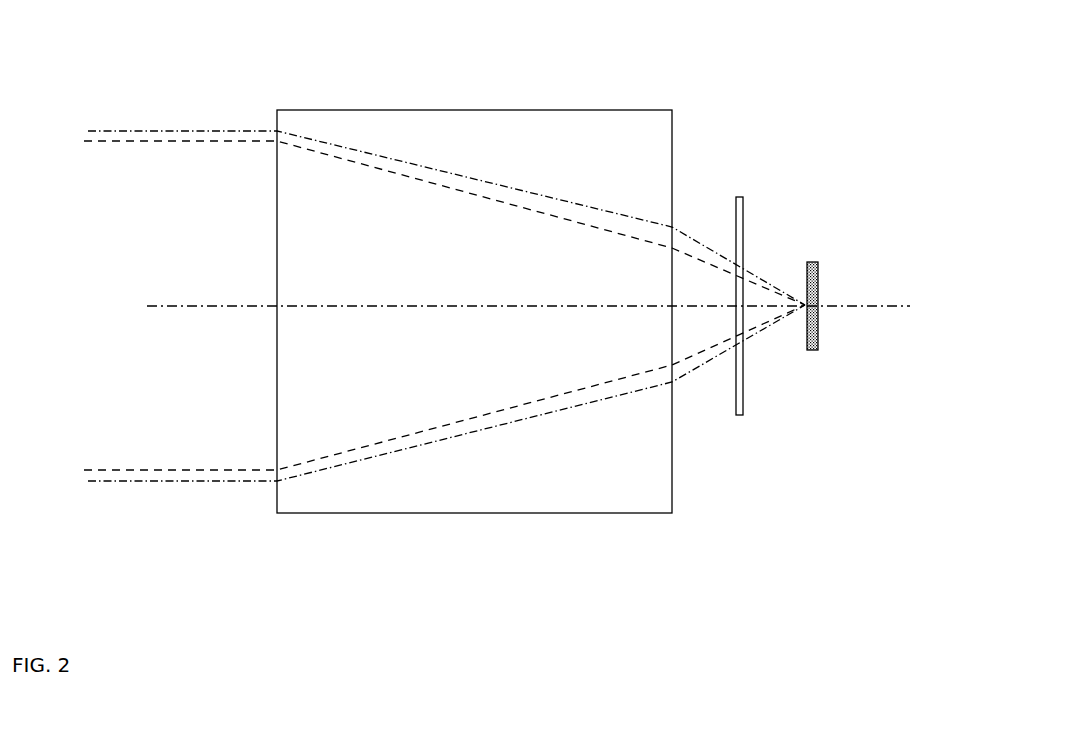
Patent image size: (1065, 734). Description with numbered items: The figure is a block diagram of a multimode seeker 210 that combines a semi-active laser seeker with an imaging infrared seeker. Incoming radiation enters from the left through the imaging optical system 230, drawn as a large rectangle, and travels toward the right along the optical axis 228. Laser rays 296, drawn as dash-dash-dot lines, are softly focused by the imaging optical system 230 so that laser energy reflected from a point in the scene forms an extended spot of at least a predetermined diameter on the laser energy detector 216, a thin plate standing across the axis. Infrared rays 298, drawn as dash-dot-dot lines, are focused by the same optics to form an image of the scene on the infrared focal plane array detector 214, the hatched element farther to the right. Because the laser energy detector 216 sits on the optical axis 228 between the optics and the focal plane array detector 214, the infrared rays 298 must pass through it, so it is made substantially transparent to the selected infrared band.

The multimode seeker 210 is at (731, 29).
The imaging optical system 230 is at (519, 110).
The optical axis 228 is at (180, 306).
The rays 298 is at (140, 131).
The rays 296 is at (167, 143).
The laser energy detector 216 is at (743, 220).
The infrared focal plane array detector 214 is at (818, 284).